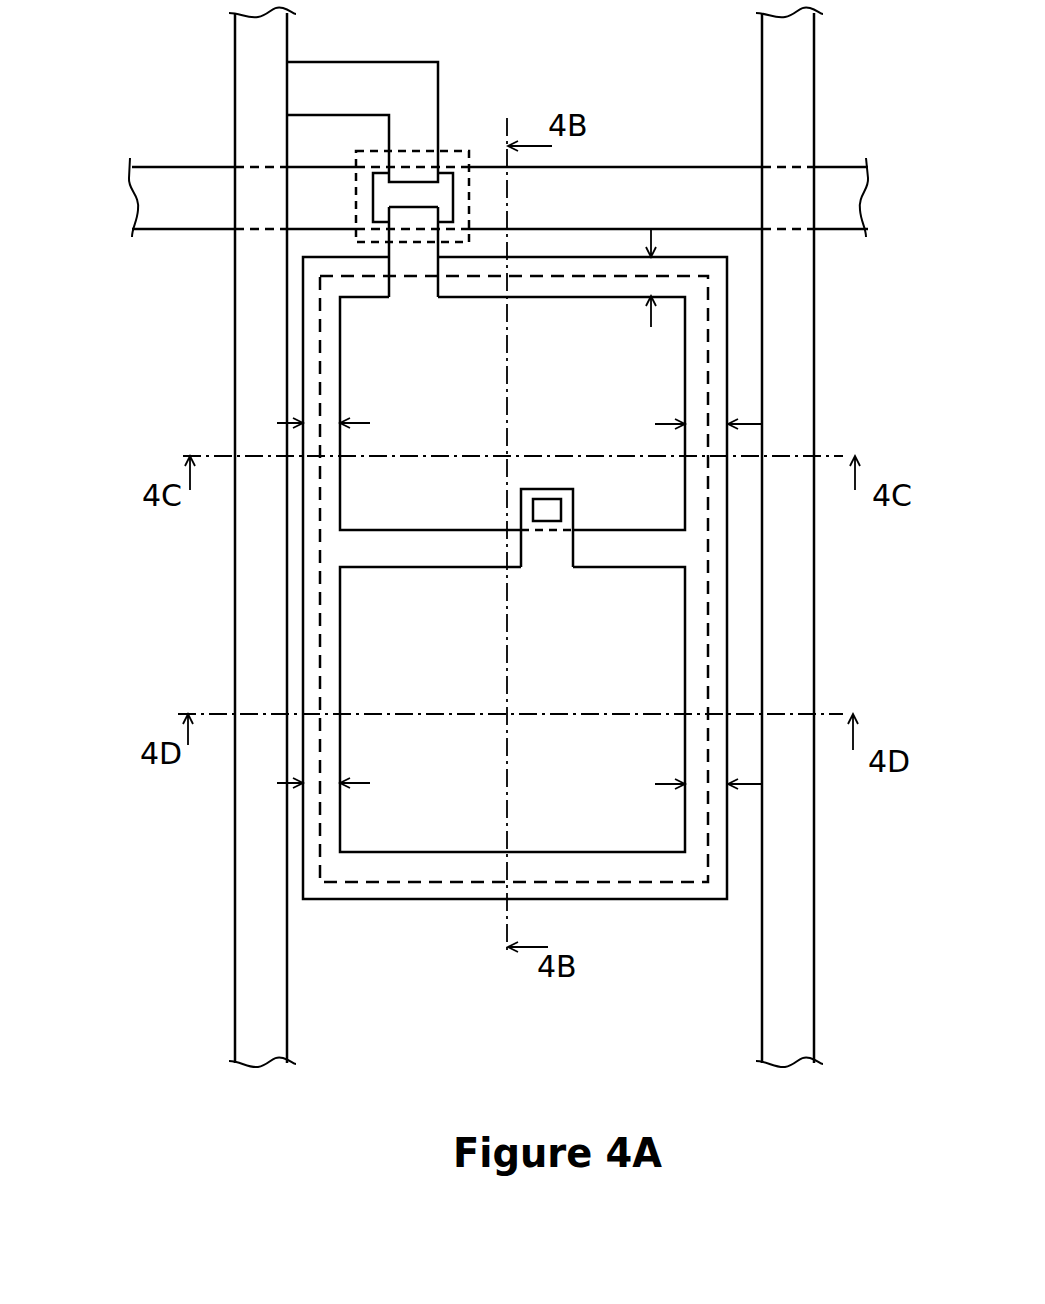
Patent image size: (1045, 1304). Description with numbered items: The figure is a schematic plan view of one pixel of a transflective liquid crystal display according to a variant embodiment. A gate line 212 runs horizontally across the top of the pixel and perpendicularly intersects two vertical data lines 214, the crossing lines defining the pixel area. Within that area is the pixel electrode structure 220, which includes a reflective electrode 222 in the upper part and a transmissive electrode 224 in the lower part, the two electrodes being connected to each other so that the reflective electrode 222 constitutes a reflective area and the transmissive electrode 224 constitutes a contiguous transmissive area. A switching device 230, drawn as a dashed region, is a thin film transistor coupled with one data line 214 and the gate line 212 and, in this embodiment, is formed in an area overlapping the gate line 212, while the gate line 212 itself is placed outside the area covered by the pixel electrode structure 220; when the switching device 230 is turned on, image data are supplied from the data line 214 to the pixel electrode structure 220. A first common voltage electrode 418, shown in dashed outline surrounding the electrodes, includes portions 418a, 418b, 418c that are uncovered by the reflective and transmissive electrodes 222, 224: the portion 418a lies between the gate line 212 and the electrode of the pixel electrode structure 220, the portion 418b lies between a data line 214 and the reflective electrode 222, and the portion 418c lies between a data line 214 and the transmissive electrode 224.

The gate line 212 is at (145, 181).
The data line 214 is at (243, 44).
The pixel electrode structure 220 is at (320, 332).
The reflective electrode 222 is at (340, 403).
The transmissive electrode 224 is at (340, 640).
The switching device 230 is at (466, 148).
The first common voltage electrode 418 is at (303, 562).
The portion of first common voltage electrode 418a is at (847, 264).
The portion of first common voltage electrode 418b is at (519, 423).
The portion of first common voltage electrode 418c is at (519, 784).